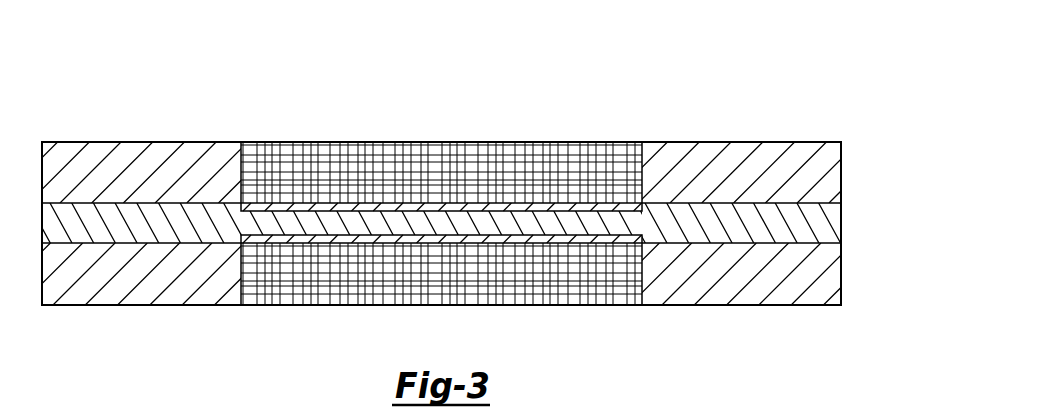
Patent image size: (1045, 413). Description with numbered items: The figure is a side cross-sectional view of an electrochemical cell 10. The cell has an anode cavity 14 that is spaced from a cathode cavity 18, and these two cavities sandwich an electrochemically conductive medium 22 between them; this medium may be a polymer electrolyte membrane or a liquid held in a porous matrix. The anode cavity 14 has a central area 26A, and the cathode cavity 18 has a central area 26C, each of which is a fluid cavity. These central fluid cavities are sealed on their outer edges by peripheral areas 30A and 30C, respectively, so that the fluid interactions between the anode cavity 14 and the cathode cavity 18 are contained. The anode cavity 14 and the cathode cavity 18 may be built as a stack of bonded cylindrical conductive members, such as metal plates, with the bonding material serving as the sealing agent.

The electrochemical cell 10 is at (703, 80).
The anode cavity 14 is at (512, 140).
The cathode cavity 18 is at (527, 307).
The electrochemically conductive medium 22 is at (800, 235).
The central area of anode cavity 26A is at (317, 163).
The central area of cathode cavity 26C is at (343, 297).
The peripheral area 30A is at (143, 158).
The peripheral area 30C is at (138, 300).